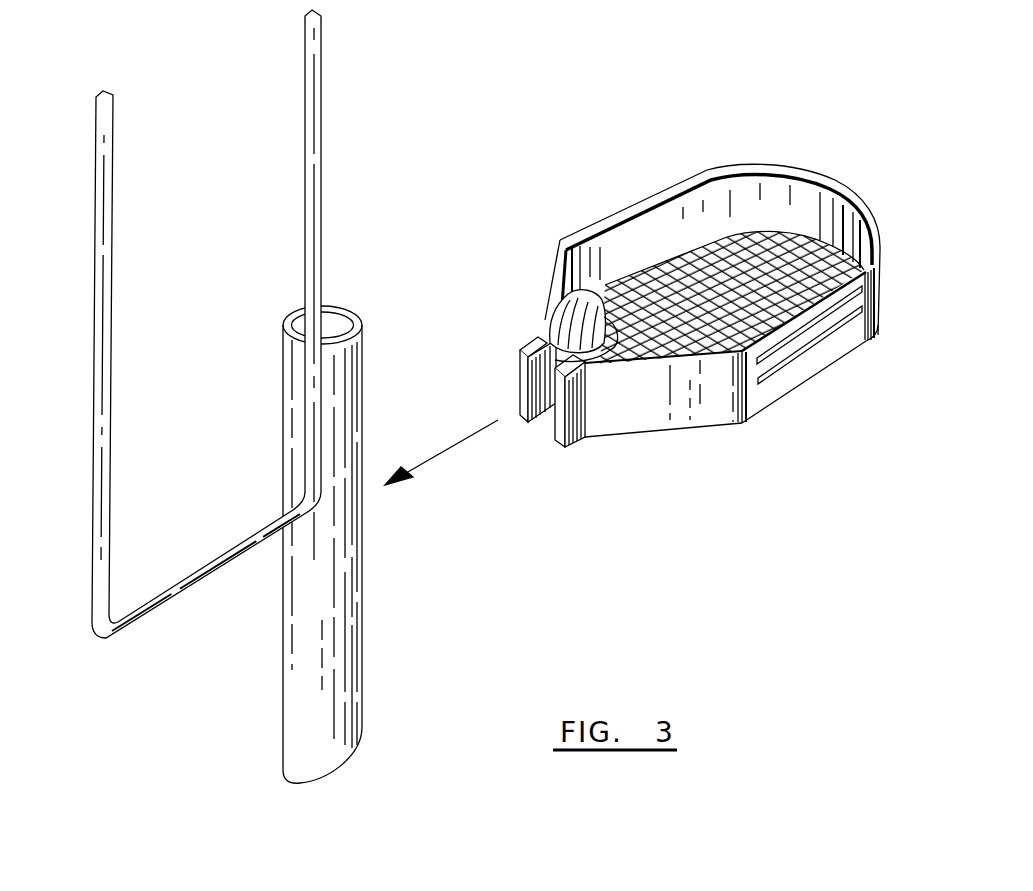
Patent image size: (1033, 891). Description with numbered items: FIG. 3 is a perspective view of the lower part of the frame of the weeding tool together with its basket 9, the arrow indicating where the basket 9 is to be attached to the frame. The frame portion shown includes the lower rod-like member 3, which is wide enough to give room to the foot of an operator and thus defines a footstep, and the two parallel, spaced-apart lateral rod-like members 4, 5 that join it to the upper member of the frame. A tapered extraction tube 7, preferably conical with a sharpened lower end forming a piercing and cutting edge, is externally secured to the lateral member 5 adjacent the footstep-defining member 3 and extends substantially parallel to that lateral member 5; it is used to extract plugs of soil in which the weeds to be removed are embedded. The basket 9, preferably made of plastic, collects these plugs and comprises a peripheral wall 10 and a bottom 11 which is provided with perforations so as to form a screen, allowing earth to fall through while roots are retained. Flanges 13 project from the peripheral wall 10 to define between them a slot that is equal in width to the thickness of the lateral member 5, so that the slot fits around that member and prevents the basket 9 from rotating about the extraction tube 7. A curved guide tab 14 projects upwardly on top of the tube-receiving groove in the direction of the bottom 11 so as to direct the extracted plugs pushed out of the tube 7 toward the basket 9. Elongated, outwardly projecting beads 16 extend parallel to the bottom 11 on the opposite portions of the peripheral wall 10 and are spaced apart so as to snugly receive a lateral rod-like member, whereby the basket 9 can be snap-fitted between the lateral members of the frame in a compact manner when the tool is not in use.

The lower rod-like member 3 is at (216, 360).
The lateral rod-like member 4 is at (95, 293).
The lateral rod-like member 5 is at (322, 60).
The extraction tube 7 is at (347, 593).
The basket 9 is at (758, 164).
The peripheral wall 10 is at (646, 410).
The bottom 11 is at (735, 300).
The flanges 13 is at (560, 240).
The curved guide tab 14 is at (552, 333).
The outwardly projecting beads 16 is at (822, 333).